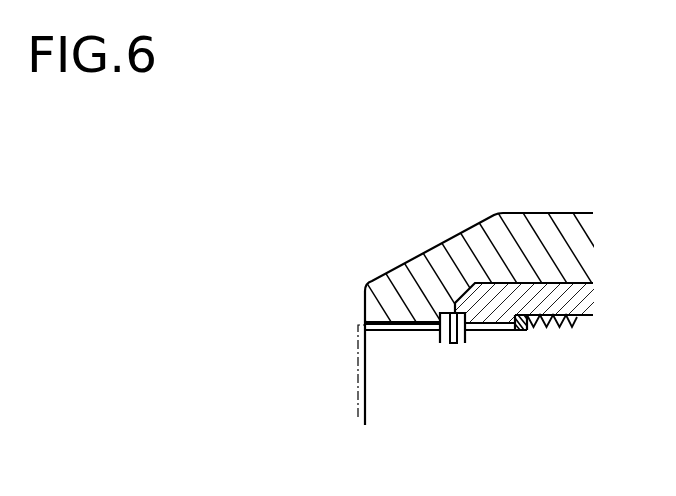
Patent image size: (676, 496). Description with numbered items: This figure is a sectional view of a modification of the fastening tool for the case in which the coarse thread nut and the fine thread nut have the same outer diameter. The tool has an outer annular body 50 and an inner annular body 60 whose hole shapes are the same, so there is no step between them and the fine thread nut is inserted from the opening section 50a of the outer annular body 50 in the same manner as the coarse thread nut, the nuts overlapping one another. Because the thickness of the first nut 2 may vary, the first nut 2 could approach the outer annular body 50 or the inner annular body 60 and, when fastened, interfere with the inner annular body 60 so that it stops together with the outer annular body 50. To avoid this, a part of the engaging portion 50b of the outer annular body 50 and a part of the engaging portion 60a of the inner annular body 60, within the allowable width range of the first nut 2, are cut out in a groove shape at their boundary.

The outer annular body 50 is at (443, 243).
The inner annular body 60 is at (515, 283).
The opening section 50a is at (383, 331).
The engaging portion 50b is at (448, 313).
The engaging portion 60a is at (482, 327).
The first nut 2 is at (357, 400).